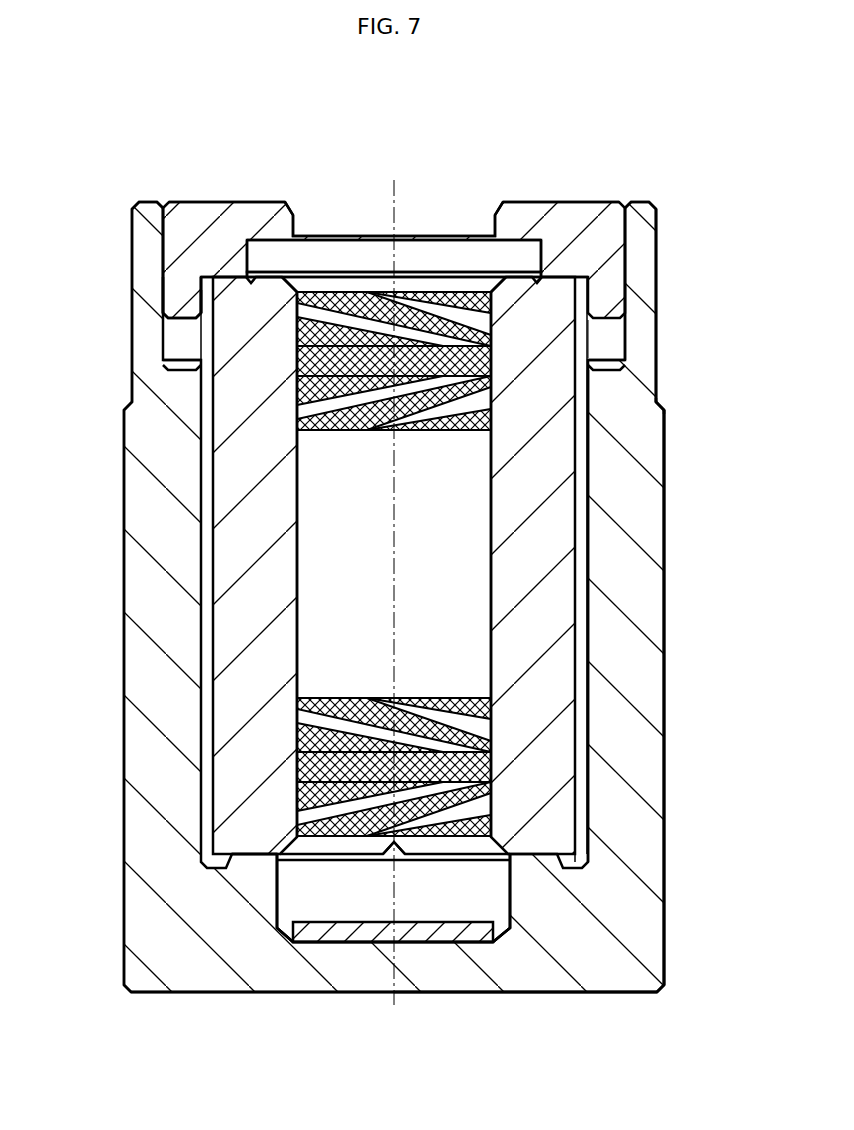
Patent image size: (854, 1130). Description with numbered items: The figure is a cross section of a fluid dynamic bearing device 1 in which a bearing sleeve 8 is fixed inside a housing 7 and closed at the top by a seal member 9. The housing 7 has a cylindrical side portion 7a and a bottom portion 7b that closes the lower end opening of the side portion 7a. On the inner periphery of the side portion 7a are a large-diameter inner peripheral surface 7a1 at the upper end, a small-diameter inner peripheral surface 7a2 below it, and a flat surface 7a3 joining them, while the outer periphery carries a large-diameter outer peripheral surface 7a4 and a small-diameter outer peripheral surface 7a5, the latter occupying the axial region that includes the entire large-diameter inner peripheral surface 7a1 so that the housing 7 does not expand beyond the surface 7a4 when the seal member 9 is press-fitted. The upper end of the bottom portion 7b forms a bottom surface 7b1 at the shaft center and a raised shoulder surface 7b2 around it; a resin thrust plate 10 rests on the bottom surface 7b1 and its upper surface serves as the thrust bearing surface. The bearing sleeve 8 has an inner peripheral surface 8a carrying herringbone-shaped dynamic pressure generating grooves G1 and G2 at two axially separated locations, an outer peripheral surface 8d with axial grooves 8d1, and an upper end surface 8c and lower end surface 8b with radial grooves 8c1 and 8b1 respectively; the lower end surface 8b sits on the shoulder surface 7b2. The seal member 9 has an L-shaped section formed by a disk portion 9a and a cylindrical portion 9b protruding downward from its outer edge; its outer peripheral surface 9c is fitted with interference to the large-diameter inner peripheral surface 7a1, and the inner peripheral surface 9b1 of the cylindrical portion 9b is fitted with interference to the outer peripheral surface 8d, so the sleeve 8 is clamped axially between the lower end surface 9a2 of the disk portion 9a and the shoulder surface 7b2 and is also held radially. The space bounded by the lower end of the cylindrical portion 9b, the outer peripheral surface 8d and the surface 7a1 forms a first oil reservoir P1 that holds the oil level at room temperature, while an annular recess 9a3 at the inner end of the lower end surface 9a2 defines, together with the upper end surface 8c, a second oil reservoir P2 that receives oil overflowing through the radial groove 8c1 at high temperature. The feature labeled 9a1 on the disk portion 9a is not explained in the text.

The fluid dynamic bearing device 1 is at (630, 158).
The housing 7 is at (666, 600).
The side portion 7a is at (642, 664).
The large-diameter inner peripheral surface 7a1 is at (624, 262).
The small-diameter inner peripheral surface 7a2 is at (588, 495).
The flat surface 7a3 is at (612, 366).
The large-diameter outer peripheral surface 7a4 is at (665, 445).
The small-diameter outer peripheral surface 7a5 is at (659, 404).
The bottom portion 7b is at (365, 978).
The bottom surface 7b1 is at (330, 942).
The shoulder surface 7b2 is at (258, 848).
The bearing sleeve 8 is at (238, 478).
The inner peripheral surface 8a is at (300, 562).
The lower end surface 8b is at (258, 848).
The radial grooves 8b1 is at (395, 844).
The upper end surface 8c is at (217, 300).
The radial grooves 8c1 is at (395, 286).
The outer peripheral surface 8d is at (205, 667).
The axial grooves 8d1 is at (215, 738).
The seal member 9 is at (204, 198).
The disk portion 9a is at (230, 222).
The recess 9a1 is at (290, 220).
The lower end surface 9a2 is at (216, 318).
The annular recess 9a3 is at (284, 241).
The cylindrical portion 9b is at (178, 302).
The inner peripheral surface 9b1 is at (212, 290).
The outer peripheral surface 9c is at (163, 266).
The thrust plate 10 is at (443, 936).
The dynamic pressure generating groove G1 is at (380, 392).
The dynamic pressure generating groove G2 is at (372, 800).
The first oil reservoir P1 is at (612, 330).
The second oil reservoir P2 is at (518, 254).